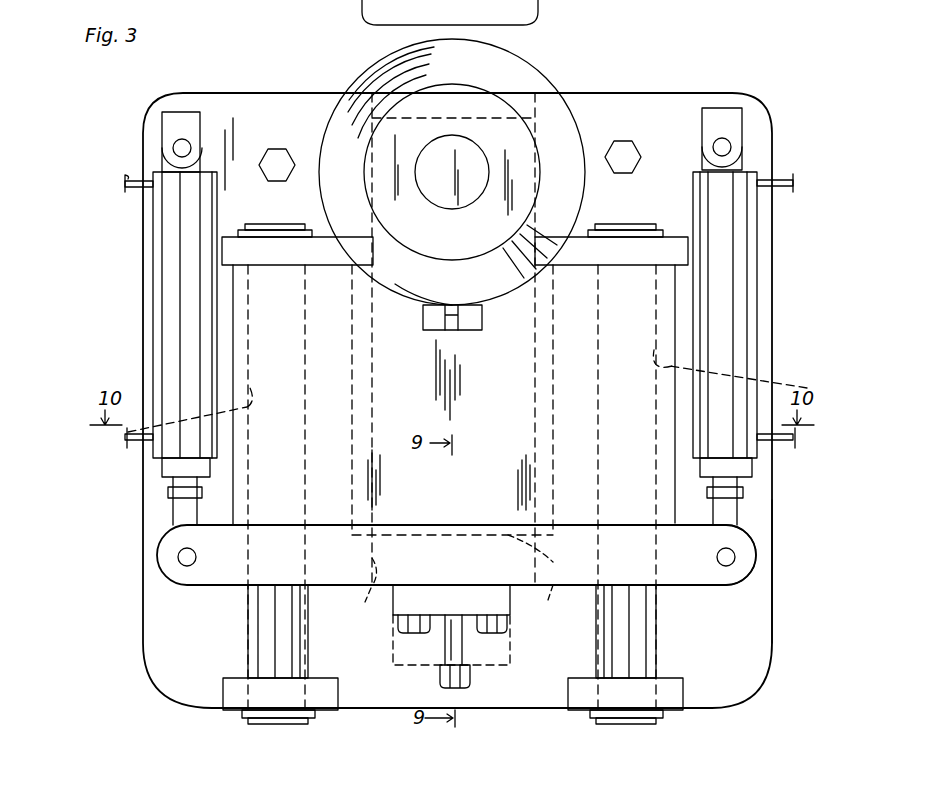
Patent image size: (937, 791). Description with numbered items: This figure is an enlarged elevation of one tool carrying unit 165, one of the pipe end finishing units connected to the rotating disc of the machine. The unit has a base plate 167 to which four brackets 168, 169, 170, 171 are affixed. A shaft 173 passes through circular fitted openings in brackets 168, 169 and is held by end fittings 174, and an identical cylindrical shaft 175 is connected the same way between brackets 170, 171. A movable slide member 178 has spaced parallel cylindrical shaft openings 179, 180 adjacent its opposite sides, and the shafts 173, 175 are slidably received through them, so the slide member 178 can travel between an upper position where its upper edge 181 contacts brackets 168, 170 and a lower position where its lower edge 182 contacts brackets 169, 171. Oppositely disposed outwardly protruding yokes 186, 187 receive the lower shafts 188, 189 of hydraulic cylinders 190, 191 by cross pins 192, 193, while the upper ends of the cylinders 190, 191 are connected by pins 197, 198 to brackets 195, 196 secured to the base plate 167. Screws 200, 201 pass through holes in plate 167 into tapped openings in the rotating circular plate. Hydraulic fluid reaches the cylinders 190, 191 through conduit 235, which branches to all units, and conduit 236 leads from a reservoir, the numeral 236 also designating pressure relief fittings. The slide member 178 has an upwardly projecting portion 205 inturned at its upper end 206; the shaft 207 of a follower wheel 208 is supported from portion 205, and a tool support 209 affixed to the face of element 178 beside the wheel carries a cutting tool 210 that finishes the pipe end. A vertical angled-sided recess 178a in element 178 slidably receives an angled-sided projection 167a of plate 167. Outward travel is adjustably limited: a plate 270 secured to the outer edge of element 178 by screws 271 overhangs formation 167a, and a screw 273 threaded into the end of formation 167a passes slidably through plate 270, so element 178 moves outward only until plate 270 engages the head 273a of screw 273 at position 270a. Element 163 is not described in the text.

The upper housing cover 163 is at (540, 12).
The tool carrying unit 165 is at (680, 90).
The base plate 167 is at (772, 239).
The projection formation 167a is at (553, 580).
The bracket 168 is at (222, 246).
The bracket 169 is at (223, 697).
The bracket 170 is at (690, 252).
The bracket 171 is at (685, 692).
The shaft 173 is at (310, 632).
The end fitting 174 is at (262, 227).
The cylindrical shaft 175 is at (658, 642).
The slide member 178 is at (232, 362).
The angled-sided recess 178a is at (347, 590).
The shaft opening 179 is at (126, 437).
The shaft opening 180 is at (749, 375).
The upper edge 181 is at (590, 235).
The lower edge 182 is at (283, 590).
The yoke 186 is at (168, 545).
The yoke 187 is at (752, 538).
The lower shaft 188 is at (172, 514).
The lower shaft 189 is at (738, 512).
The hydraulic cylinder 190 is at (153, 291).
The hydraulic cylinder 191 is at (757, 297).
The cross pin 192 is at (183, 566).
The cross pin 193 is at (735, 560).
The bracket 195 is at (181, 112).
The bracket 196 is at (742, 128).
The pin 197 is at (174, 150).
The pin 198 is at (731, 147).
The screw 200 is at (280, 148).
The screw 201 is at (627, 140).
The upwardly projecting portion 205 is at (368, 160).
The inturned upper end 206 is at (493, 125).
The shaft 207 is at (452, 210).
The follower wheel 208 is at (392, 296).
The tool support 209 is at (423, 318).
The cutting tool 210 is at (467, 322).
The conduit 235 is at (125, 185).
The conduit 236 is at (130, 450).
The plate 270 is at (510, 605).
The position 270a is at (480, 667).
The screw 271 is at (402, 635).
The screw 273 is at (445, 652).
The head 273a is at (440, 677).